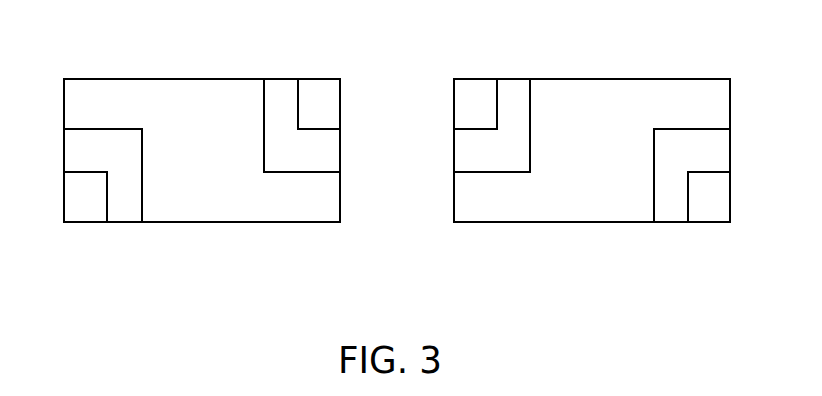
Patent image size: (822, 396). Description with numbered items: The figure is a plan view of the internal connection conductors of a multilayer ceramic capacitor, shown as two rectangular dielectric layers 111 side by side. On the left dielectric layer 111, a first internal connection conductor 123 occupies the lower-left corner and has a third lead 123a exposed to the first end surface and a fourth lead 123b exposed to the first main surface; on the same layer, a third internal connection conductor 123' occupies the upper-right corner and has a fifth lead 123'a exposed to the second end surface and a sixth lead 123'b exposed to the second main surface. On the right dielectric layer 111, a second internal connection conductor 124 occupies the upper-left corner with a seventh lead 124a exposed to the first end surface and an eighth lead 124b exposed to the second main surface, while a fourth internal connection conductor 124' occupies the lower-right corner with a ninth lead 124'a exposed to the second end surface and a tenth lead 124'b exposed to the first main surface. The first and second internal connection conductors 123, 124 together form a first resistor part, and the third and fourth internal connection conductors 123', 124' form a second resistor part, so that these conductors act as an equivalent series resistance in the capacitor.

The dielectric layer 111 is at (142, 107).
The first internal connection conductor 123 is at (135, 206).
The third lead 123a is at (83, 152).
The fourth lead 123b is at (120, 208).
The third internal connection conductor 123' is at (267, 96).
The fifth lead 123'a is at (341, 85).
The sixth lead 123'b is at (297, 96).
The second internal connection conductor 124 is at (526, 96).
The seventh lead 124a is at (473, 150).
The eighth lead 124b is at (510, 90).
The fourth internal connection conductor 124' is at (657, 206).
The ninth lead 124'a is at (730, 217).
The tenth lead 124'b is at (686, 206).